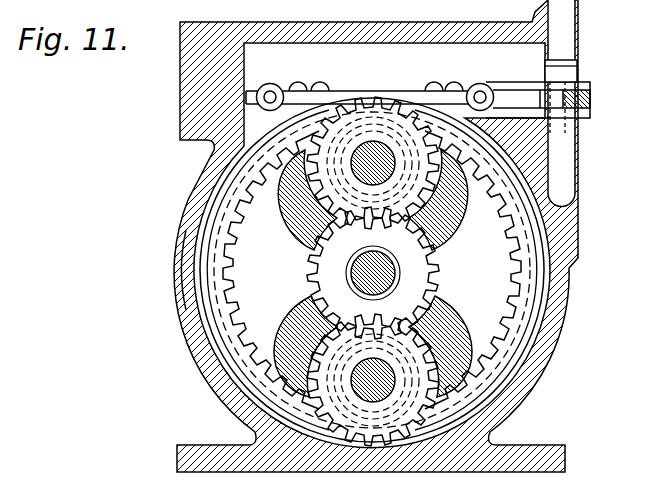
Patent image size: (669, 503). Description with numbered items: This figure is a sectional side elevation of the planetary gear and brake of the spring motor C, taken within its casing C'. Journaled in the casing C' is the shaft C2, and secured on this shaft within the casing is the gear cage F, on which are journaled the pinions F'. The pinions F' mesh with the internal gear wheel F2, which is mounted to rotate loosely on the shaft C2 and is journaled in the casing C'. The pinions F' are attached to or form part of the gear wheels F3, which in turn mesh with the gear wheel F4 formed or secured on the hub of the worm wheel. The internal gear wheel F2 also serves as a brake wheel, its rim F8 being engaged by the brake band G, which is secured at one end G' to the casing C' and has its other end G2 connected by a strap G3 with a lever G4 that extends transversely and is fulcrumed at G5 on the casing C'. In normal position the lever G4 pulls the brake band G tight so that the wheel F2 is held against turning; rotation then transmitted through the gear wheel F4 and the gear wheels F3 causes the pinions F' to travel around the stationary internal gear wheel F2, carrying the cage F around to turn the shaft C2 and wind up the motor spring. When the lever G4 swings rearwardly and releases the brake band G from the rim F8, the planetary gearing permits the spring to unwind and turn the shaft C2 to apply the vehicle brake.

The spring motor C is at (362, 236).
The casing C' is at (167, 270).
The shaft C2 is at (346, 270).
The gear cage F is at (355, 244).
The pinions F' is at (440, 346).
The internal gear wheel F2 is at (241, 249).
The gear wheels F3 is at (435, 192).
The gear wheel F4 is at (425, 257).
The rim F8 is at (537, 291).
The brake band G is at (357, 83).
The brake band end G' is at (270, 81).
The brake band end G2 is at (468, 83).
The strap G3 is at (506, 82).
The lever G4 is at (592, 98).
The fulcrum G5 is at (558, 82).